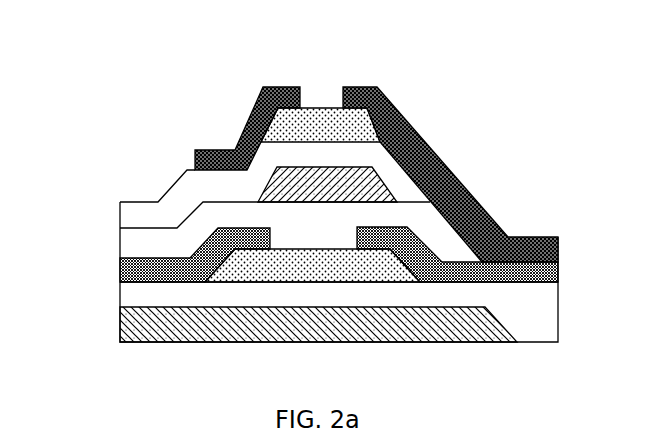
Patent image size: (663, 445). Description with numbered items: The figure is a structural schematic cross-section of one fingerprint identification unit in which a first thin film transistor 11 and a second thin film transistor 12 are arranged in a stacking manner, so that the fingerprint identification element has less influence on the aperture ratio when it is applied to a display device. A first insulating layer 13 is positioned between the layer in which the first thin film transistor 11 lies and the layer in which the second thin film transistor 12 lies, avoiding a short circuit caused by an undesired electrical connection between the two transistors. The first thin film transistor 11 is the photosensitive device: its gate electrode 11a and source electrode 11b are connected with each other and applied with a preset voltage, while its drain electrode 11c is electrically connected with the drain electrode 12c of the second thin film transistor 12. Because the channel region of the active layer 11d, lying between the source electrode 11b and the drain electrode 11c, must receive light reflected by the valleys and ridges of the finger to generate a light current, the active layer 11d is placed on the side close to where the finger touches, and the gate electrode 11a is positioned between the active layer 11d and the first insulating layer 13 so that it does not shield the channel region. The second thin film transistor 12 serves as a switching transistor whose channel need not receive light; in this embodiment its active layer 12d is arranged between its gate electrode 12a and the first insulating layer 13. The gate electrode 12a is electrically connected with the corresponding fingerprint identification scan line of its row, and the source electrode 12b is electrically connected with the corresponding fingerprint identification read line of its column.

The first thin film transistor 11 is at (62, 90).
The gate electrode of the first thin film transistor 11a is at (304, 177).
The source electrode of the first thin film transistor 11b is at (247, 123).
The drain electrode of the first thin film transistor 11c is at (417, 142).
The active layer of the first thin film transistor 11d is at (325, 127).
The second thin film transistor 12 is at (62, 258).
The gate electrode of the second thin film transistor 12a is at (388, 325).
The source electrode of the second thin film transistor 12b is at (132, 272).
The drain electrode of the second thin film transistor 12c is at (557, 272).
The active layer of the second thin film transistor 12d is at (303, 267).
The first insulating layer 13 is at (150, 242).